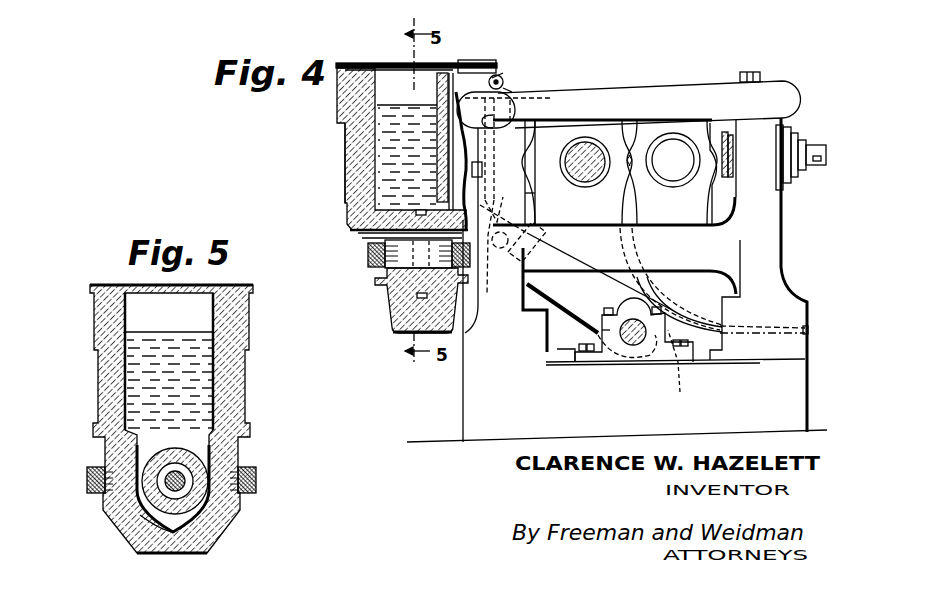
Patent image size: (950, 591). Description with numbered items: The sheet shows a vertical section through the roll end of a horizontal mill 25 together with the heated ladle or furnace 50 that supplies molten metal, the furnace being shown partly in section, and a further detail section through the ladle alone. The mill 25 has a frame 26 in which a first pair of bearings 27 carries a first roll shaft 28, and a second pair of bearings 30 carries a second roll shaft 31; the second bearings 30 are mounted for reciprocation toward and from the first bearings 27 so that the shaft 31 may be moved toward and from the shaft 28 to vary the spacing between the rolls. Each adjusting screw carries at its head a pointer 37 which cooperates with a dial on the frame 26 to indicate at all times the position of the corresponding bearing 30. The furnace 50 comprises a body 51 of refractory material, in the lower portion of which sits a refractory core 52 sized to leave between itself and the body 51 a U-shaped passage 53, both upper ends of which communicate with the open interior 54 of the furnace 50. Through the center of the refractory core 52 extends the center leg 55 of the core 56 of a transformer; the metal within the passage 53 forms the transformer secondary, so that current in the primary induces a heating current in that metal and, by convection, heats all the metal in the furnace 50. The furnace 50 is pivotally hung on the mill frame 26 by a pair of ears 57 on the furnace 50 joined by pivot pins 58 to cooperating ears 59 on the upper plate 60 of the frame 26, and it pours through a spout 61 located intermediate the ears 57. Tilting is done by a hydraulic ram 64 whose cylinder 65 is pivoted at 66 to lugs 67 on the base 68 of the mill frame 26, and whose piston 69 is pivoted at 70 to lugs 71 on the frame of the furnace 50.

In FIG. 4, the horizontal mill 25 is at (478, 403).
In FIG. 4, the frame 26 is at (500, 323).
In FIG. 4, the first pair of bearings 27 is at (583, 150).
In FIG. 4, the first roll shaft 28 is at (575, 138).
In FIG. 4, the second pair of bearings 30 is at (671, 120).
In FIG. 4, the second roll shaft 31 is at (674, 153).
In FIG. 4, the pointer 37 is at (803, 118).
In FIG. 4, the heated ladle or furnace 50 is at (348, 145).
In FIG. 4, the body 51 is at (358, 176).
In FIG. 5, the body 51 is at (113, 317).
In FIG. 5, the core 52 is at (207, 510).
In FIG. 4, the U-shaped passage 53 is at (419, 302).
In FIG. 5, the U-shaped passage 53 is at (205, 469).
In FIG. 4, the open interior 54 is at (387, 190).
In FIG. 5, the open interior 54 is at (216, 410).
In FIG. 5, the center leg 55 is at (128, 512).
In FIG. 4, the transformer core 56 is at (367, 262).
In FIG. 5, the transformer core 56 is at (86, 481).
In FIG. 4, the ears 57 is at (493, 77).
In FIG. 4, the pivot pins 58 is at (502, 81).
In FIG. 4, the cooperating ears 59 is at (512, 92).
In FIG. 4, the upper plate 60 is at (641, 87).
In FIG. 4, the spout 61 is at (504, 110).
In FIG. 4, the hydraulic ram 64 is at (565, 293).
In FIG. 4, the cylinder 65 is at (598, 305).
In FIG. 4, the pivot 66 is at (655, 374).
In FIG. 4, the lugs 67 is at (681, 371).
In FIG. 4, the base 68 is at (513, 425).
In FIG. 4, the piston 69 is at (486, 303).
In FIG. 4, the pivot 70 is at (475, 184).
In FIG. 4, the lugs 71 is at (528, 230).